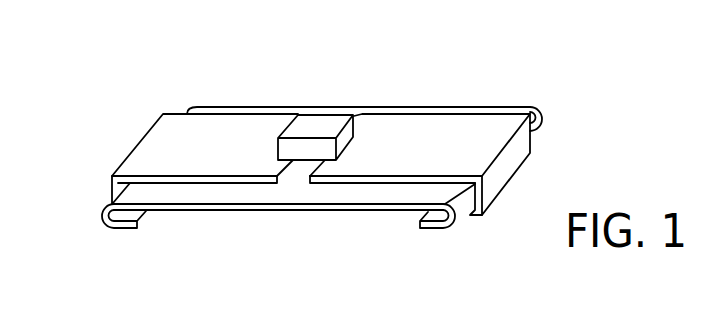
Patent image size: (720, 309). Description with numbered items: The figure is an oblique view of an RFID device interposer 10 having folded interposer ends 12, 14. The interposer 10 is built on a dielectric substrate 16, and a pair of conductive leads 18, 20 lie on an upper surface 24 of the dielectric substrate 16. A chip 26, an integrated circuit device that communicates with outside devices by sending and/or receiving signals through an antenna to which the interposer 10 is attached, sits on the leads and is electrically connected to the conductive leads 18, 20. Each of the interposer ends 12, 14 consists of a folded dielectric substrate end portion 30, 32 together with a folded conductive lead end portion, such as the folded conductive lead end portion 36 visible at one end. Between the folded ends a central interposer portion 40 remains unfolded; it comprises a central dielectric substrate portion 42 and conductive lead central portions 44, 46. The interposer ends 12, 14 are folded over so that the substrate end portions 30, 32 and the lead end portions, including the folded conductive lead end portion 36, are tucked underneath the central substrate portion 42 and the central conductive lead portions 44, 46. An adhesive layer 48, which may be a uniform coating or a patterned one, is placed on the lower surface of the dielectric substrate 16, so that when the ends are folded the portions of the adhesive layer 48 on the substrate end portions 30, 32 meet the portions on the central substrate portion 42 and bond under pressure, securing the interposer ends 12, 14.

The interposer 10 is at (98, 106).
The folded interposer end 12 is at (87, 150).
The folded interposer end 14 is at (565, 165).
The dielectric substrate 16 is at (446, 94).
The conductive lead 18 is at (204, 96).
The conductive lead 20 is at (484, 92).
The upper surface 24 is at (255, 107).
The chip 26 is at (322, 123).
The folded dielectric substrate end portion 30 is at (123, 230).
The folded dielectric substrate end portion 32 is at (429, 231).
The folded conductive lead end portion 36 is at (472, 218).
The central interposer portion 40 is at (359, 80).
The central dielectric substrate portion 42 is at (272, 107).
The conductive lead central portion 44 is at (223, 123).
The conductive lead central portion 46 is at (495, 125).
The adhesive layer 48 is at (242, 221).